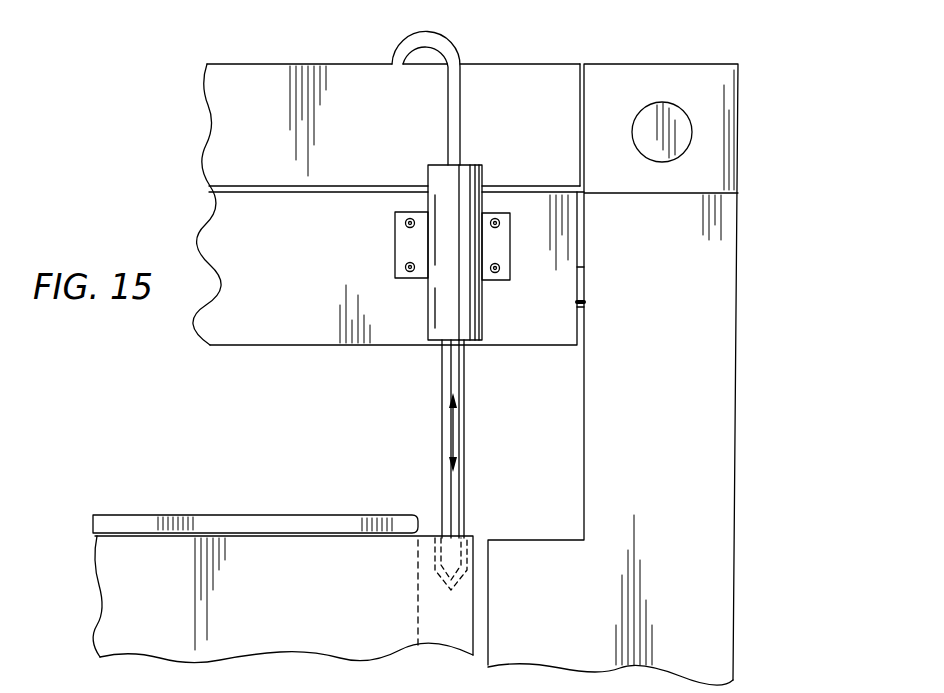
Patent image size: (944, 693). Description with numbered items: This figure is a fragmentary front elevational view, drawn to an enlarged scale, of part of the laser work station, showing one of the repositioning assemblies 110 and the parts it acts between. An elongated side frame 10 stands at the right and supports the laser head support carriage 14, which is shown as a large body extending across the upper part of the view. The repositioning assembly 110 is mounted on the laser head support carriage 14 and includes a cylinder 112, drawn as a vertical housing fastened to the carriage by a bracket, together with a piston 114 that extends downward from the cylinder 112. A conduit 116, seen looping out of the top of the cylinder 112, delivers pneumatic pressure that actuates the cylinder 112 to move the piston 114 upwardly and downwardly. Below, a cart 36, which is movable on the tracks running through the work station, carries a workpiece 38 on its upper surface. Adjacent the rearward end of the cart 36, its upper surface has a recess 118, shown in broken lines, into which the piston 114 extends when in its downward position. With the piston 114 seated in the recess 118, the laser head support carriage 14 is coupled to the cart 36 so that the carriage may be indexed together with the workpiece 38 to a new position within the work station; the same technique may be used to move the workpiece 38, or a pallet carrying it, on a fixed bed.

The side frame 10 is at (700, 505).
The laser head support carriage 14 is at (242, 132).
The cart 36 is at (117, 588).
The workpiece 38 is at (120, 512).
The repositioning assembly 110 is at (398, 247).
The cylinder 112 is at (448, 197).
The piston 114 is at (445, 363).
The conduit 116 is at (462, 47).
The recess 118 is at (455, 585).